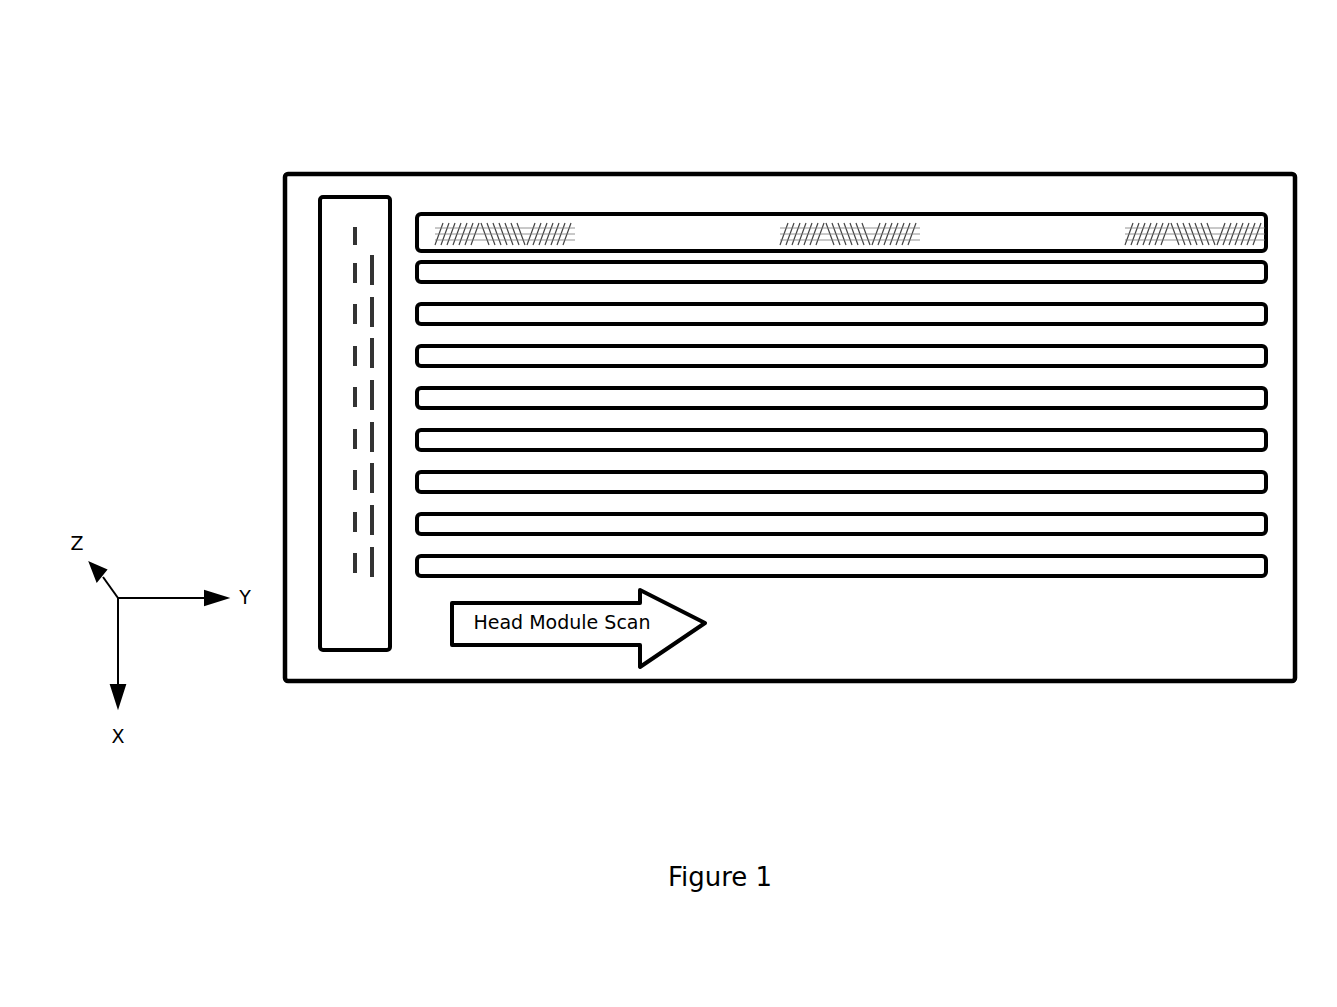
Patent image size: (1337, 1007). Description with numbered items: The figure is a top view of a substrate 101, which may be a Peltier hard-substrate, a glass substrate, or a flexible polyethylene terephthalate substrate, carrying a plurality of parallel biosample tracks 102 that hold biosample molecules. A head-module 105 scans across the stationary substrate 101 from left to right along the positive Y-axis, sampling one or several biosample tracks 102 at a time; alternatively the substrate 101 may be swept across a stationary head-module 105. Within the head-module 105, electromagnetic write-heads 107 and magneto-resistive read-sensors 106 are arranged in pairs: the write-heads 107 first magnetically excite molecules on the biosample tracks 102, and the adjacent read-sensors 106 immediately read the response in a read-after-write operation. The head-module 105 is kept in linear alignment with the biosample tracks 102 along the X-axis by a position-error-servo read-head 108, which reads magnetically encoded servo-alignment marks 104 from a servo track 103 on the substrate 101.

The substrate 101 is at (1147, 667).
The biosample tracks 102 is at (867, 563).
The servo track 103 is at (1103, 226).
The servo-alignment marks 104 is at (800, 226).
The head-module 105 is at (337, 214).
The read-sensors 106 is at (352, 561).
The write-heads 107 is at (382, 515).
The position-error-servo (PES) read-head 108 is at (356, 224).